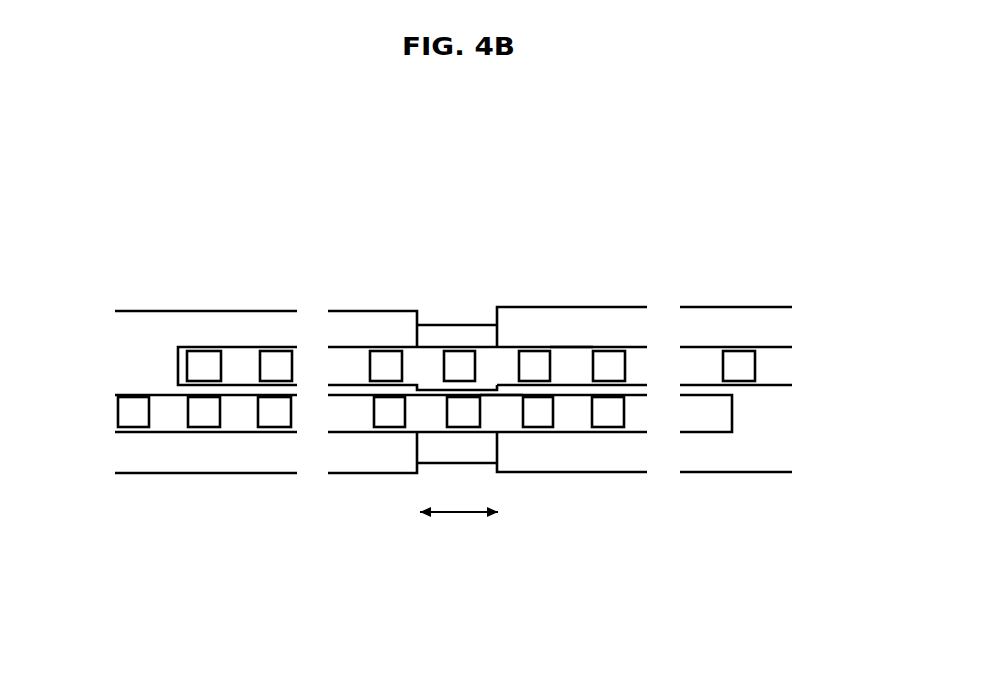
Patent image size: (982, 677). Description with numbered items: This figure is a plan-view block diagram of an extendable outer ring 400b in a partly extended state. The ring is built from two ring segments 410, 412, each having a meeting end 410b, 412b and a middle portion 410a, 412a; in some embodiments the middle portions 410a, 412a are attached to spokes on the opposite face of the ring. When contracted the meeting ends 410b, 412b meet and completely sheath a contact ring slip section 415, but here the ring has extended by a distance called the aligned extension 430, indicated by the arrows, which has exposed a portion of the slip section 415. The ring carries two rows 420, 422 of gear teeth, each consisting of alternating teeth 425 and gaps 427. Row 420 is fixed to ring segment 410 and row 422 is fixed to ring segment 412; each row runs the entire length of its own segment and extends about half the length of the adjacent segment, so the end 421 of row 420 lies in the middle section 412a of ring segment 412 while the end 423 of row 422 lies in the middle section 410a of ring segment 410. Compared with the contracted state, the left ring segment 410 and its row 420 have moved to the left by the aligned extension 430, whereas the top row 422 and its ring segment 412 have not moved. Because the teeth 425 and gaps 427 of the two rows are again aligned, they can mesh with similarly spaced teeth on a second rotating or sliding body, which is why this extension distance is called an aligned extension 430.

The extendable outer ring 400b is at (485, 127).
The ring segment 410 is at (415, 251).
The middle portion of ring segment 410a is at (252, 317).
The meeting end of ring segment 410b is at (393, 320).
The ring segment 412 is at (872, 263).
The middle portion of ring segment 412a is at (705, 323).
The meeting end of ring segment 412b is at (518, 322).
The ring slip section 415 is at (455, 337).
The row of gear teeth 420 is at (350, 432).
The end of row 421 is at (842, 537).
The row of gear teeth 422 is at (638, 388).
The end of row 423 is at (178, 368).
The teeth 425 is at (382, 418).
The gaps 427 is at (495, 415).
The aligned extension 430 is at (467, 515).